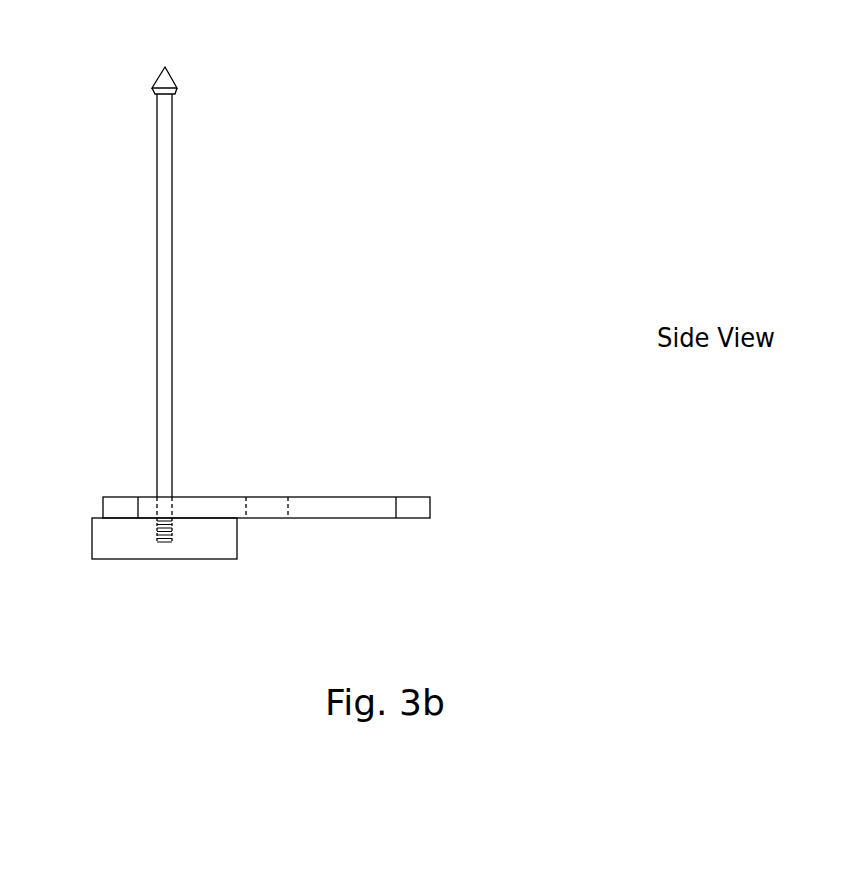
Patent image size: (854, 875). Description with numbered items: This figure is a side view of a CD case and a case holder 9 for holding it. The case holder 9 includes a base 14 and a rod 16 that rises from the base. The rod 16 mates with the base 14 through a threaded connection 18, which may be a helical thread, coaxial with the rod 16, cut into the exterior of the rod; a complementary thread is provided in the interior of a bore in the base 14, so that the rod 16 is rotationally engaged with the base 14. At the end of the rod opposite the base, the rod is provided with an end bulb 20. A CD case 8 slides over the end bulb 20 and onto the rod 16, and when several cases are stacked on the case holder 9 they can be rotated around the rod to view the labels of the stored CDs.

The CD case 8 is at (437, 487).
The case holder 9 is at (163, 319).
The base 14 is at (92, 538).
The rod 16 is at (172, 298).
The threaded connection 18 is at (184, 552).
The end bulb 20 is at (172, 83).